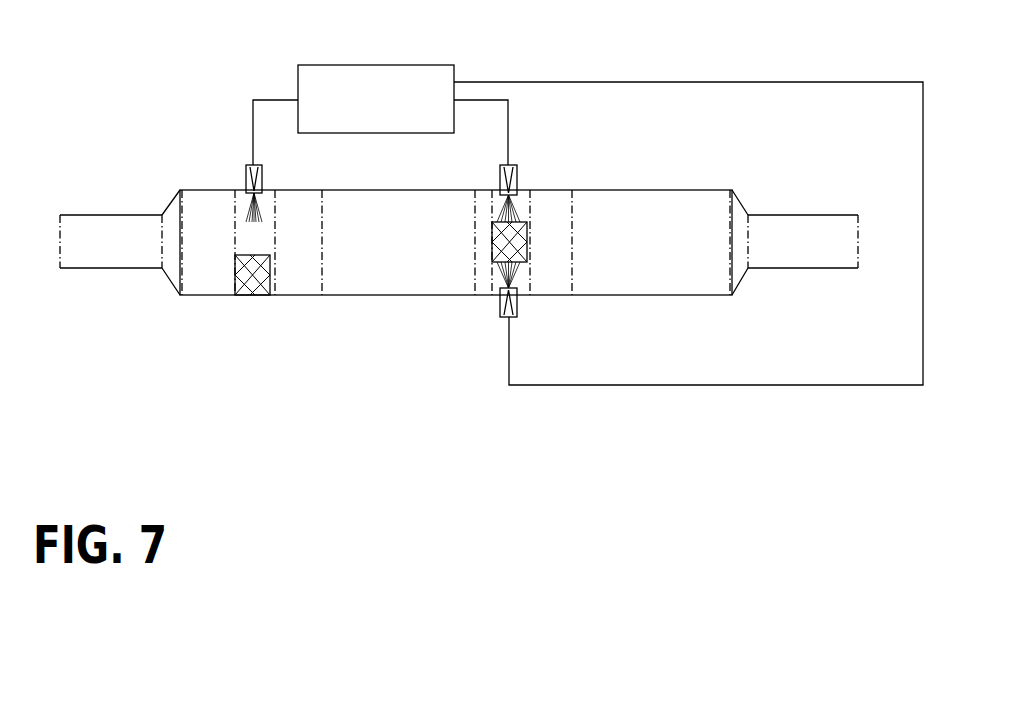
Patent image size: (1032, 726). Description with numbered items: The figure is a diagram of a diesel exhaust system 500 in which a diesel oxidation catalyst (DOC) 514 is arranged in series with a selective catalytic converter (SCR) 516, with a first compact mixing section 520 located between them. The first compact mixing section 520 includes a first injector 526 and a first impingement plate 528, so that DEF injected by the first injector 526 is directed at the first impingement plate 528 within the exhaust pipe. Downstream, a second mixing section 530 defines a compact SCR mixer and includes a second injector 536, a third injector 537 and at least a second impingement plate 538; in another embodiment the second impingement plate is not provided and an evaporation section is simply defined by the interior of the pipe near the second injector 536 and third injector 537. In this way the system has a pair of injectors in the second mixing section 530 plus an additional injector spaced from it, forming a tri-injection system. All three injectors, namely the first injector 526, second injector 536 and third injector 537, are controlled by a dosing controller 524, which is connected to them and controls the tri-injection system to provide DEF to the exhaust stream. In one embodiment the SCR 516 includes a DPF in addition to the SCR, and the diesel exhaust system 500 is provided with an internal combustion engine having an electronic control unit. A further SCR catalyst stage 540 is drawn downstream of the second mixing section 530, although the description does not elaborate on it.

The diesel exhaust system 500 is at (87, 330).
The diesel oxidation catalyst 514 is at (193, 187).
The selective catalytic converter 516 is at (350, 295).
The first compact mixing section 520 is at (260, 303).
The dosing controller 524 is at (326, 68).
The first injector 526 is at (245, 177).
The first impingement plate 528 is at (245, 297).
The second mixing section 530 is at (527, 305).
The second injector 536 is at (517, 175).
The third injector 537 is at (502, 302).
The second impingement plate 538 is at (530, 247).
The SCR catalyst 540 is at (663, 188).